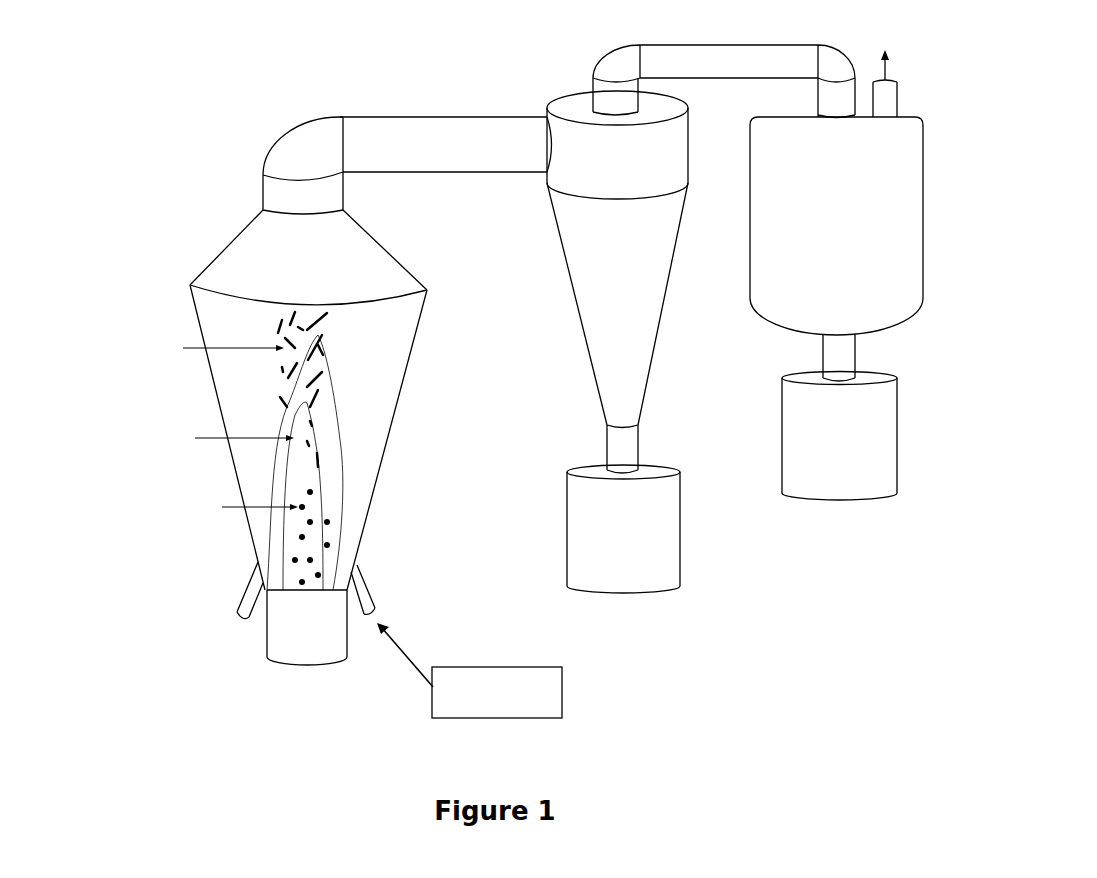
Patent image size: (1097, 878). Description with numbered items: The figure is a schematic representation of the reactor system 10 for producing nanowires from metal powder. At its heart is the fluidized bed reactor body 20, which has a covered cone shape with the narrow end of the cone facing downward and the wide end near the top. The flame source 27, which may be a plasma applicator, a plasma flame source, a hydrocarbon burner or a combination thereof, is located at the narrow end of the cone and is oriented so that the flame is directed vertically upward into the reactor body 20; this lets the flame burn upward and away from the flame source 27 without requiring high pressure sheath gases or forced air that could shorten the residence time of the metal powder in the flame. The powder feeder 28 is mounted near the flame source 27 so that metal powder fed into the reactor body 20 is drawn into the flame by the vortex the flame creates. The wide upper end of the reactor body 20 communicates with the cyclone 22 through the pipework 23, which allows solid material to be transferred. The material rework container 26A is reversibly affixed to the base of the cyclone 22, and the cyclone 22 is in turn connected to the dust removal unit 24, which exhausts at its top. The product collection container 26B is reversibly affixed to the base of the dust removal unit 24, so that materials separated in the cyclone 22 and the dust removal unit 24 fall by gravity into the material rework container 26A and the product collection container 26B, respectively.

The reactor system 10 is at (268, 96).
The fluidized bed reactor body 20 is at (220, 315).
The cyclone 22 is at (590, 253).
The pipework 23 is at (442, 142).
The dust removal unit 24 is at (777, 290).
The material rework container 26A is at (660, 490).
The product collection container 26B is at (808, 412).
The flame source 27 is at (285, 645).
The powder feeder 28 is at (445, 672).